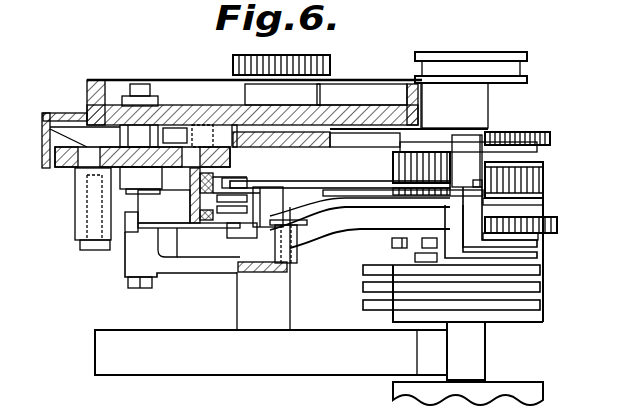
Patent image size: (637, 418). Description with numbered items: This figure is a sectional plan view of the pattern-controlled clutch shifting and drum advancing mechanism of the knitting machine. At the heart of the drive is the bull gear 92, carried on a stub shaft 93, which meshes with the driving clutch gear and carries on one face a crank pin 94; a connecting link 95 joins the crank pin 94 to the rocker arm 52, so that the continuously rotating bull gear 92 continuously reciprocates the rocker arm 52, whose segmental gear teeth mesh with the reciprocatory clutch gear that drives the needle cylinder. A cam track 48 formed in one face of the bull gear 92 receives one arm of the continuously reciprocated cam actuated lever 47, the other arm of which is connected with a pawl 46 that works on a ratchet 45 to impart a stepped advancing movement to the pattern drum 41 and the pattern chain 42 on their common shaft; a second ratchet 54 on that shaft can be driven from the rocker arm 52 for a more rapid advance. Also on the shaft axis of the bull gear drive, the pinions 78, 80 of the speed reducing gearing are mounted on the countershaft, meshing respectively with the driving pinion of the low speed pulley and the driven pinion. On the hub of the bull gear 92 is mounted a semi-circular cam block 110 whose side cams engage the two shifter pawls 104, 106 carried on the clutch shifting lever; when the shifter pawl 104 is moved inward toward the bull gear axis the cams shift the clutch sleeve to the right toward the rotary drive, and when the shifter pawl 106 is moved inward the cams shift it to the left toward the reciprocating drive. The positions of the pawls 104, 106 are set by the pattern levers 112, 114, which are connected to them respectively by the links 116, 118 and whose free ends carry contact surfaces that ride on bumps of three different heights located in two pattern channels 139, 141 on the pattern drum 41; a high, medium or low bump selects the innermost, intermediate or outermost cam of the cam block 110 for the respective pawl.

The pattern drum 41 is at (542, 297).
The pattern chain 42 is at (545, 175).
The ratchet 45 is at (536, 132).
The pawl 46 is at (365, 137).
The cam actuated lever 47 is at (182, 137).
The cam track 48 is at (45, 120).
The rocker arm 52 is at (202, 267).
The ratchet 54 is at (557, 220).
The pinion 78 is at (312, 57).
The pinion 80 is at (320, 140).
The bull gear 92 is at (63, 163).
The stub shaft 93 is at (96, 118).
The crank pin 94 is at (83, 200).
The connecting link 95 is at (125, 238).
The shifter pawl 104 is at (219, 220).
The shifter pawl 106 is at (235, 178).
The cam block 110 is at (172, 267).
The pattern lever 112 is at (540, 258).
The pattern lever 114 is at (540, 243).
The link 116 is at (388, 247).
The link 118 is at (320, 182).
The pattern channel 139 is at (392, 243).
The pattern channel 141 is at (366, 270).